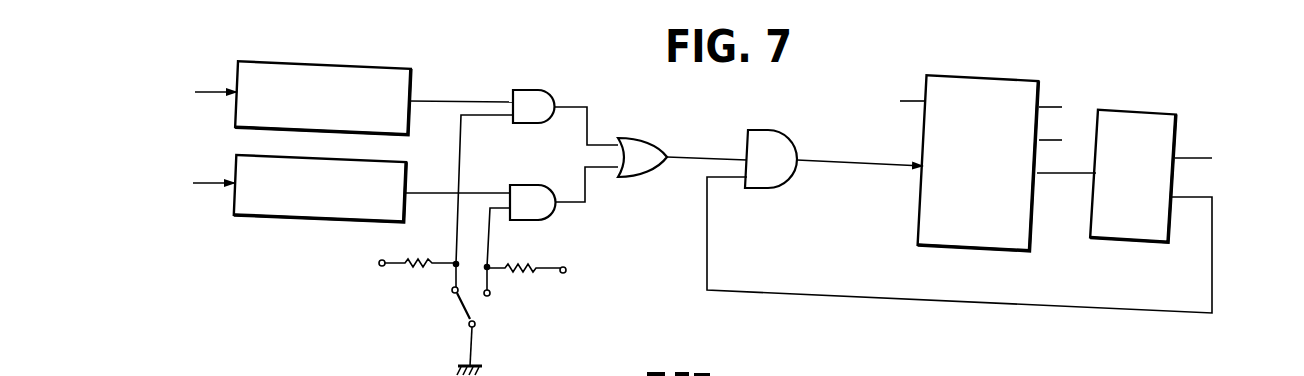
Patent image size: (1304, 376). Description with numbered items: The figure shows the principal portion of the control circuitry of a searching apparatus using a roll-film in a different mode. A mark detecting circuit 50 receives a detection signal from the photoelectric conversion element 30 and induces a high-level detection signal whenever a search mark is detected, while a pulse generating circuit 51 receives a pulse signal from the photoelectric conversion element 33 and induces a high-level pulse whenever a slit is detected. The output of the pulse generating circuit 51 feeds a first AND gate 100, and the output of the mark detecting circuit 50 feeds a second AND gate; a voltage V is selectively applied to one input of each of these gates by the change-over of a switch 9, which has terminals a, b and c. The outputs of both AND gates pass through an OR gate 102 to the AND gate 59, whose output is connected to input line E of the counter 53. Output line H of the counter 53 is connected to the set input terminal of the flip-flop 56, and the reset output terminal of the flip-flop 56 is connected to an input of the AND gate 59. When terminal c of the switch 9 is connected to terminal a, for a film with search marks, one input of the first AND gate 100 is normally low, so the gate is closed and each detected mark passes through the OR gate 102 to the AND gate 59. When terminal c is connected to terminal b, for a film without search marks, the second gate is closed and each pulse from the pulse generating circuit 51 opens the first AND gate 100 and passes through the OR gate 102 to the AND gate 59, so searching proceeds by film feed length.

The photoelectric conversion element 33 is at (200, 93).
The photoelectric conversion element 30 is at (197, 185).
The pulse generating circuit 51 is at (325, 62).
The mark detecting circuit 50 is at (295, 222).
The first AND gate 100 is at (533, 90).
The OR gate 102 is at (635, 138).
The AND gate 59 is at (774, 130).
The counter 53 is at (923, 131).
The flip-flop 56 is at (1177, 125).
The switch 9 is at (473, 313).